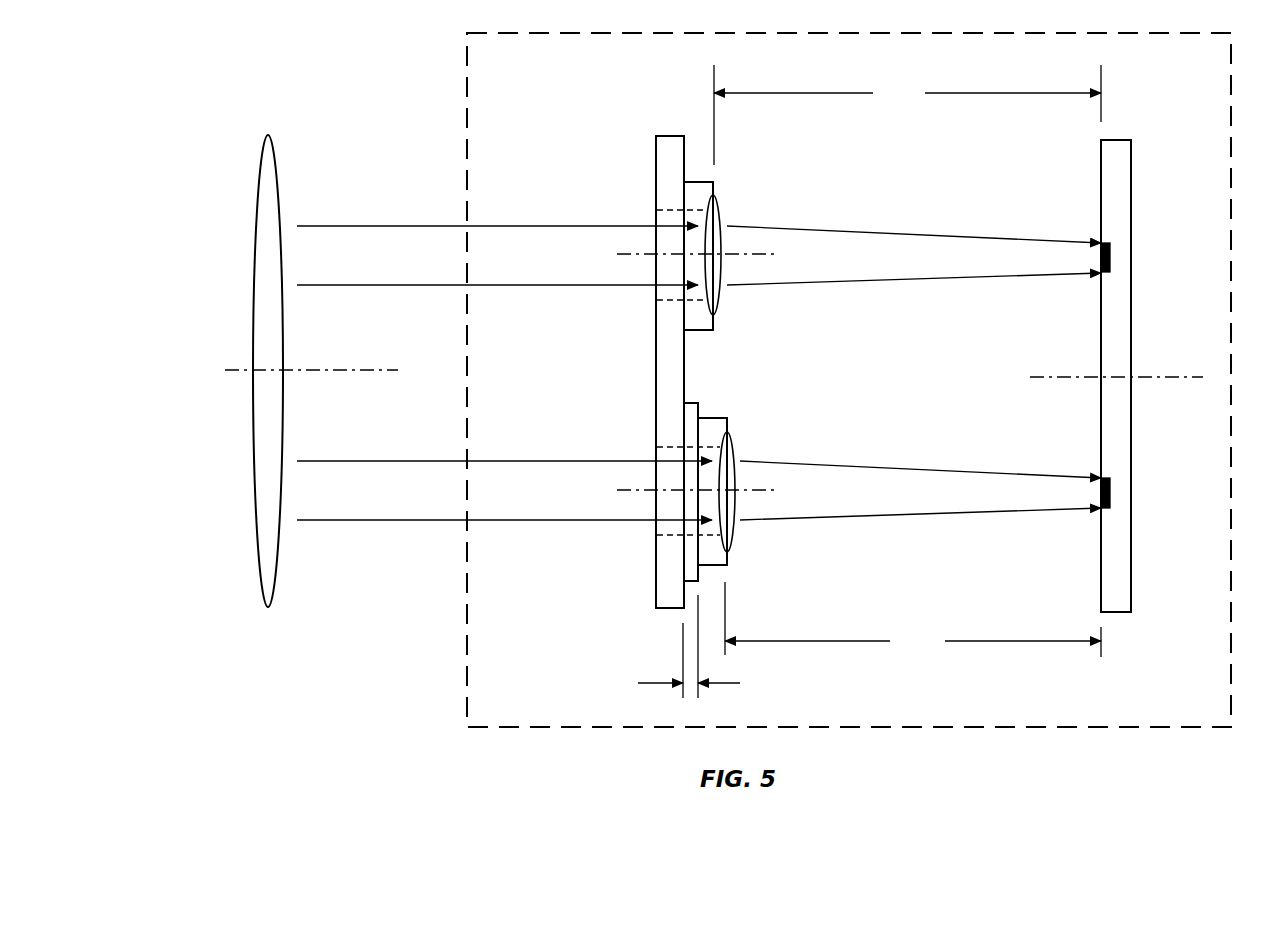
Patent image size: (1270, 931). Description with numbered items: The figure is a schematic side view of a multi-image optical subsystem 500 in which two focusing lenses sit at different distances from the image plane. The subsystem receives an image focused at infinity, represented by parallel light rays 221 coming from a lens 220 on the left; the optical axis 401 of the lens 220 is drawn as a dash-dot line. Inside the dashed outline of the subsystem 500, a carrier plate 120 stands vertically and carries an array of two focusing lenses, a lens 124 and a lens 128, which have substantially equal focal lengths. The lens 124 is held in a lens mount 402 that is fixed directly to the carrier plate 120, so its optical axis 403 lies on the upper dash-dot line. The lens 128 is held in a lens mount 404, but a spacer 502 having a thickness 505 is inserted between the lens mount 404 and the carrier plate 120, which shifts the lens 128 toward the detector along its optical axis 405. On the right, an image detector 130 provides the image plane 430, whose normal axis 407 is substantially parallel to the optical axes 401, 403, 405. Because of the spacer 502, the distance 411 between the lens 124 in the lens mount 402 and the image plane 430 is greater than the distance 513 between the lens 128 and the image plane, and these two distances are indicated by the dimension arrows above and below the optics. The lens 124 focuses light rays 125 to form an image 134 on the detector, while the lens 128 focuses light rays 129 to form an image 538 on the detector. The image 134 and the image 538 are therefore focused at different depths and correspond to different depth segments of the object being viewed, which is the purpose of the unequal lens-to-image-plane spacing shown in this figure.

The multi-image optical subsystem 500 is at (467, 697).
The lens 220 is at (265, 607).
The parallel light rays 221 is at (356, 226).
The optical axis 401 is at (340, 370).
The carrier plate 120 is at (655, 592).
The optical axis 403 is at (608, 254).
The optical axis 405 is at (608, 492).
The lens mount 402 is at (704, 190).
The lens 124 is at (719, 305).
The spacer 502 is at (700, 403).
The lens mount 404 is at (727, 426).
The lens 128 is at (733, 540).
The light rays 125 is at (818, 231).
The light rays 129 is at (818, 465).
The image detector 130 is at (1115, 583).
The image plane 430 is at (1101, 151).
The image 134 is at (1110, 257).
The image 538 is at (1110, 492).
The normal axis 407 is at (1041, 377).
The distance 411 is at (907, 115).
The distance 513 is at (913, 619).
The thickness 505 is at (713, 646).